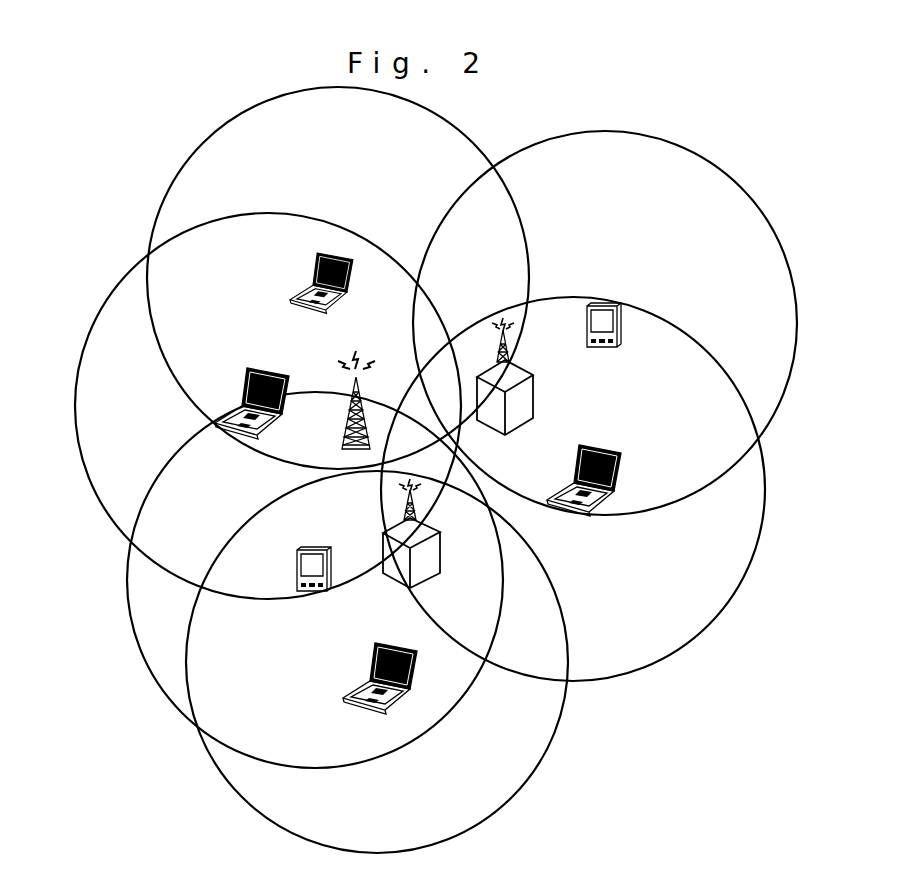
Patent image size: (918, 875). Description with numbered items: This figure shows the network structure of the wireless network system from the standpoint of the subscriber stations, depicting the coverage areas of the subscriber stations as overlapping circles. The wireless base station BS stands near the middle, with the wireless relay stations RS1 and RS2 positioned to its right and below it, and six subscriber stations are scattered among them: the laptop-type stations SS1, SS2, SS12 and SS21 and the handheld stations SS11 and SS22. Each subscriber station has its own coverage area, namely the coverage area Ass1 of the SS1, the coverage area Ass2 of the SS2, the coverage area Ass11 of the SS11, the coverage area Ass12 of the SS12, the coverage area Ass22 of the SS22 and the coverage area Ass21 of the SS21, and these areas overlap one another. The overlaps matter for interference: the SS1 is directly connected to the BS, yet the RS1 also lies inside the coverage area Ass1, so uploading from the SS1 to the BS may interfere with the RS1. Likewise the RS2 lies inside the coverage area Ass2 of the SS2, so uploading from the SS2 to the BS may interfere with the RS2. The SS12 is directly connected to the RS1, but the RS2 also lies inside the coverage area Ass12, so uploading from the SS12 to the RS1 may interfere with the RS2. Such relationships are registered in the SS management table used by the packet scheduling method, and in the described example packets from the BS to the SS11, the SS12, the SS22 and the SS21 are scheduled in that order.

The coverage area of subscriber station SS1 Ass1 is at (461, 128).
The coverage area of subscriber station SS11 Ass11 is at (706, 158).
The coverage area of subscriber station SS2 Ass2 is at (102, 308).
The coverage area of subscriber station SS12 Ass12 is at (733, 590).
The coverage area of subscriber station SS22 Ass22 is at (148, 670).
The coverage area of subscriber station SS21 Ass21 is at (532, 785).
The wireless base station BS is at (356, 415).
The wireless relay station RS1 is at (505, 389).
The wireless relay station RS2 is at (409, 548).
The subscriber station SS1 is at (321, 299).
The subscriber station SS2 is at (257, 412).
The subscriber station SS11 is at (603, 339).
The subscriber station SS12 is at (606, 480).
The subscriber station SS21 is at (380, 690).
The subscriber station SS22 is at (315, 586).